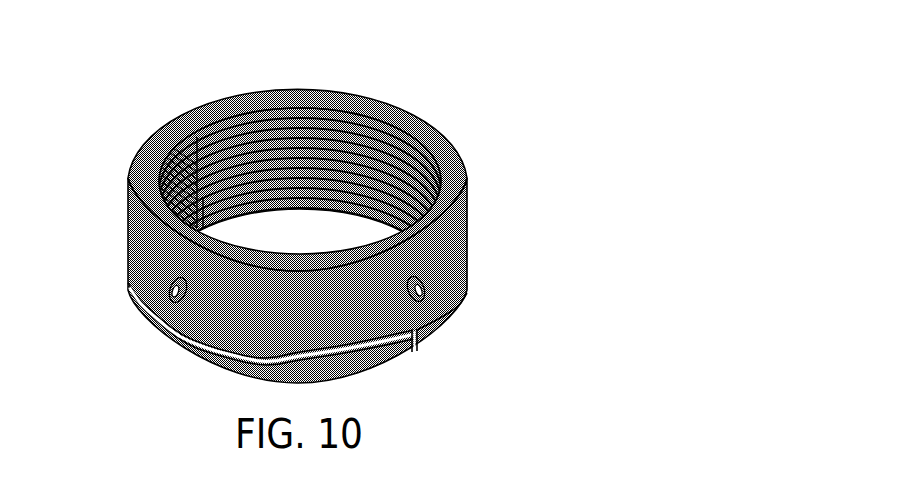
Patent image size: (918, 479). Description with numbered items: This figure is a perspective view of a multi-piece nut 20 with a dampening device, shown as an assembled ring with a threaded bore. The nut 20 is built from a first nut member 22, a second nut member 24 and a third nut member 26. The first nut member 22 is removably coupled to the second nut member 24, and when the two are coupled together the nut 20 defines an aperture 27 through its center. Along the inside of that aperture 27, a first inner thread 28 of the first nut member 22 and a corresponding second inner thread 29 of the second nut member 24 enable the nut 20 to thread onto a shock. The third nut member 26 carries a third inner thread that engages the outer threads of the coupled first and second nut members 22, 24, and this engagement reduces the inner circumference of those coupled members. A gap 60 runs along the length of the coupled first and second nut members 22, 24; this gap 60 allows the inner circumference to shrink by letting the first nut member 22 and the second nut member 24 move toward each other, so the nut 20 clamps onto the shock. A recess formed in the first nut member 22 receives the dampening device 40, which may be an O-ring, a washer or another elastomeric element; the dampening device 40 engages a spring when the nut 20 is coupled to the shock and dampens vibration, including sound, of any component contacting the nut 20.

The multi-piece nut 20 is at (332, 207).
The first nut member 22 is at (460, 305).
The second nut member 24 is at (183, 335).
The third nut member 26 is at (448, 261).
The aperture 27 is at (241, 145).
The first inner thread 28 is at (247, 162).
The second inner thread 29 is at (197, 155).
The dampening device 40 is at (458, 158).
The gap 60 is at (418, 364).